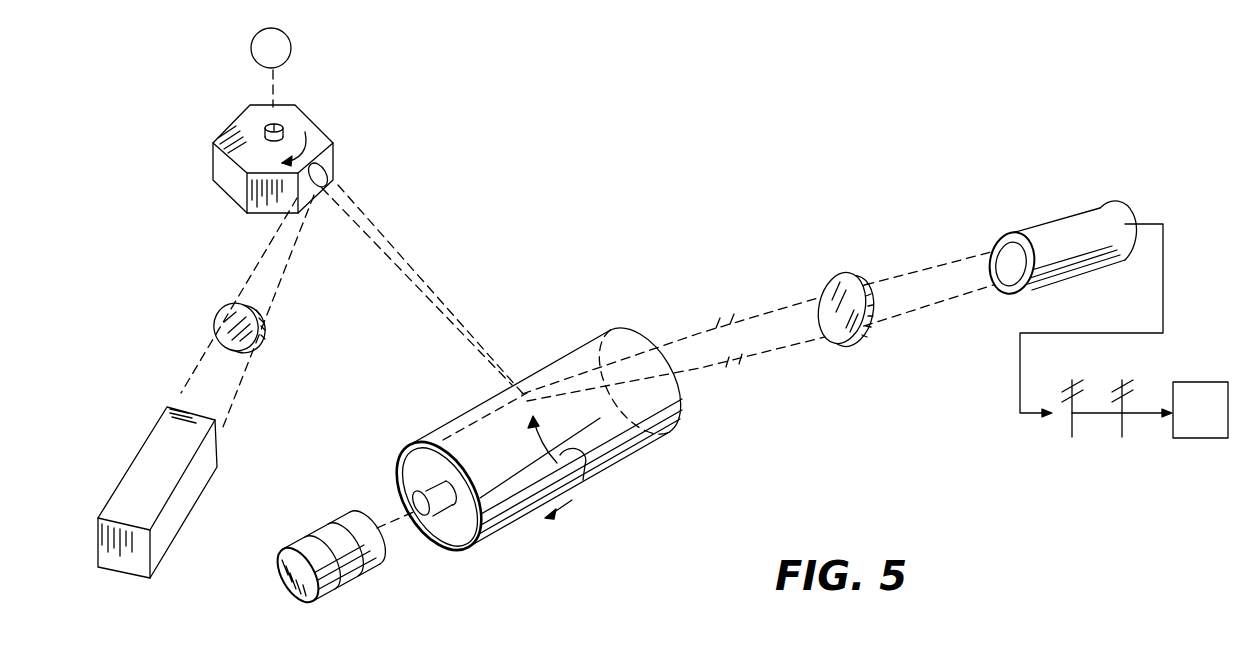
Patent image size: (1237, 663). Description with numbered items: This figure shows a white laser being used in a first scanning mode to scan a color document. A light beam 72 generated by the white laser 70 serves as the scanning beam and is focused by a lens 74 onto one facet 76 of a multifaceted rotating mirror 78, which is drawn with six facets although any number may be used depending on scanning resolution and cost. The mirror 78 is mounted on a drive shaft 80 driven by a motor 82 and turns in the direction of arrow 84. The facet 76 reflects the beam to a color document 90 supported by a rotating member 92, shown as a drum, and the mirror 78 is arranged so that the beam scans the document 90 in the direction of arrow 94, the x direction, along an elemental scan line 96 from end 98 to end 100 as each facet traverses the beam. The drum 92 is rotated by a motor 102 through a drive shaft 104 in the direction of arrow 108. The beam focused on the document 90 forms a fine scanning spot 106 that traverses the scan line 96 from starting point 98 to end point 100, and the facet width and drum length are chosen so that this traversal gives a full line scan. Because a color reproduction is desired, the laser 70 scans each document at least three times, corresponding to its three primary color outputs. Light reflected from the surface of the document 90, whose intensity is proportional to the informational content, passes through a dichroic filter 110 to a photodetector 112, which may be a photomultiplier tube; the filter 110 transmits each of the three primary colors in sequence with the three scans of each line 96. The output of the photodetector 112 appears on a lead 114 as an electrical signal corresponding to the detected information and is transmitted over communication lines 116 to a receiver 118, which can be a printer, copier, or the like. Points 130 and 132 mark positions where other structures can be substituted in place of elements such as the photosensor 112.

The white laser 70 is at (208, 468).
The light beam 72 is at (243, 388).
The lens 74 is at (232, 306).
The facet 76 is at (327, 162).
The multifaceted rotating mirror 78 is at (320, 137).
The drive shaft 80 is at (275, 93).
The motor 82 is at (291, 49).
The arrow 84 is at (330, 138).
The color document 90 is at (402, 493).
The rotating member 92 is at (438, 528).
The arrow 94 is at (569, 502).
The scan line 96 is at (577, 369).
The end 98 is at (634, 331).
The end 100 is at (428, 438).
The motor 102 is at (290, 600).
The drive shaft 104 is at (443, 498).
The scanning spot 106 is at (530, 388).
The arrow 108 is at (584, 480).
The dichroic filter 110 is at (838, 274).
The photodetector 112 is at (1027, 235).
The lead 114 is at (1020, 388).
The communication lines 116 is at (1092, 428).
The receiver 118 is at (1213, 388).
The point 130 is at (725, 317).
The point 132 is at (737, 366).